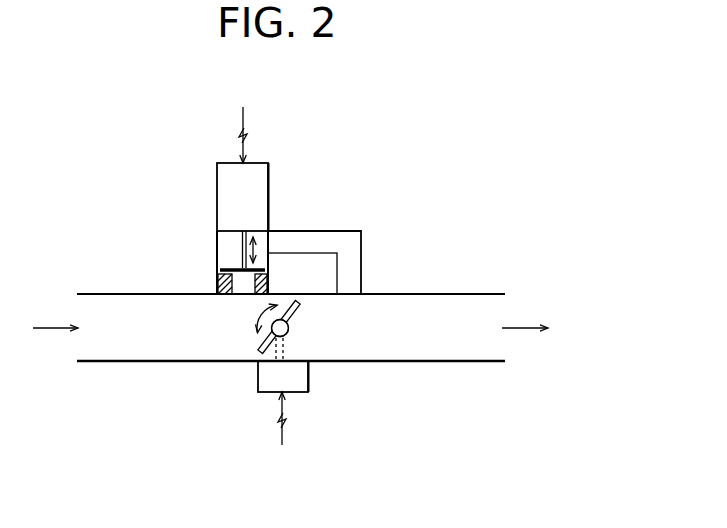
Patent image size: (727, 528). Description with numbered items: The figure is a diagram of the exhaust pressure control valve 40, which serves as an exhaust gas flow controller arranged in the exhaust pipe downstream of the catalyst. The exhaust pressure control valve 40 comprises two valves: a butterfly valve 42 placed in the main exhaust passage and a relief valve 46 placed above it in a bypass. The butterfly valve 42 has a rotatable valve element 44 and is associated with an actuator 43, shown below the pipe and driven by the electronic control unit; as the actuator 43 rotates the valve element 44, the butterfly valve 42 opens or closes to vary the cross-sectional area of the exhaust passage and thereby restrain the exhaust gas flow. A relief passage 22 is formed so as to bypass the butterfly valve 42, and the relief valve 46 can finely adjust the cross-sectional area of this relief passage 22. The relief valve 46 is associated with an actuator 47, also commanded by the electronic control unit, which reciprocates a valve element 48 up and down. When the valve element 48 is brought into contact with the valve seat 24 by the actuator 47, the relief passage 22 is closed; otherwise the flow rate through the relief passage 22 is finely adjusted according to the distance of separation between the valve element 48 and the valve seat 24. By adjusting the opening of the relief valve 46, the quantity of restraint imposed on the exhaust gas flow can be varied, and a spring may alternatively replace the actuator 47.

The exhaust pressure control valve 40 is at (358, 170).
The relief passage 22 is at (331, 231).
The relief valve 46 is at (214, 185).
The actuator 47 is at (268, 185).
The valve element 48 is at (233, 267).
The valve seat 24 is at (216, 288).
The butterfly valve 42 is at (298, 315).
The valve element 44 is at (266, 339).
The actuator 43 is at (299, 382).